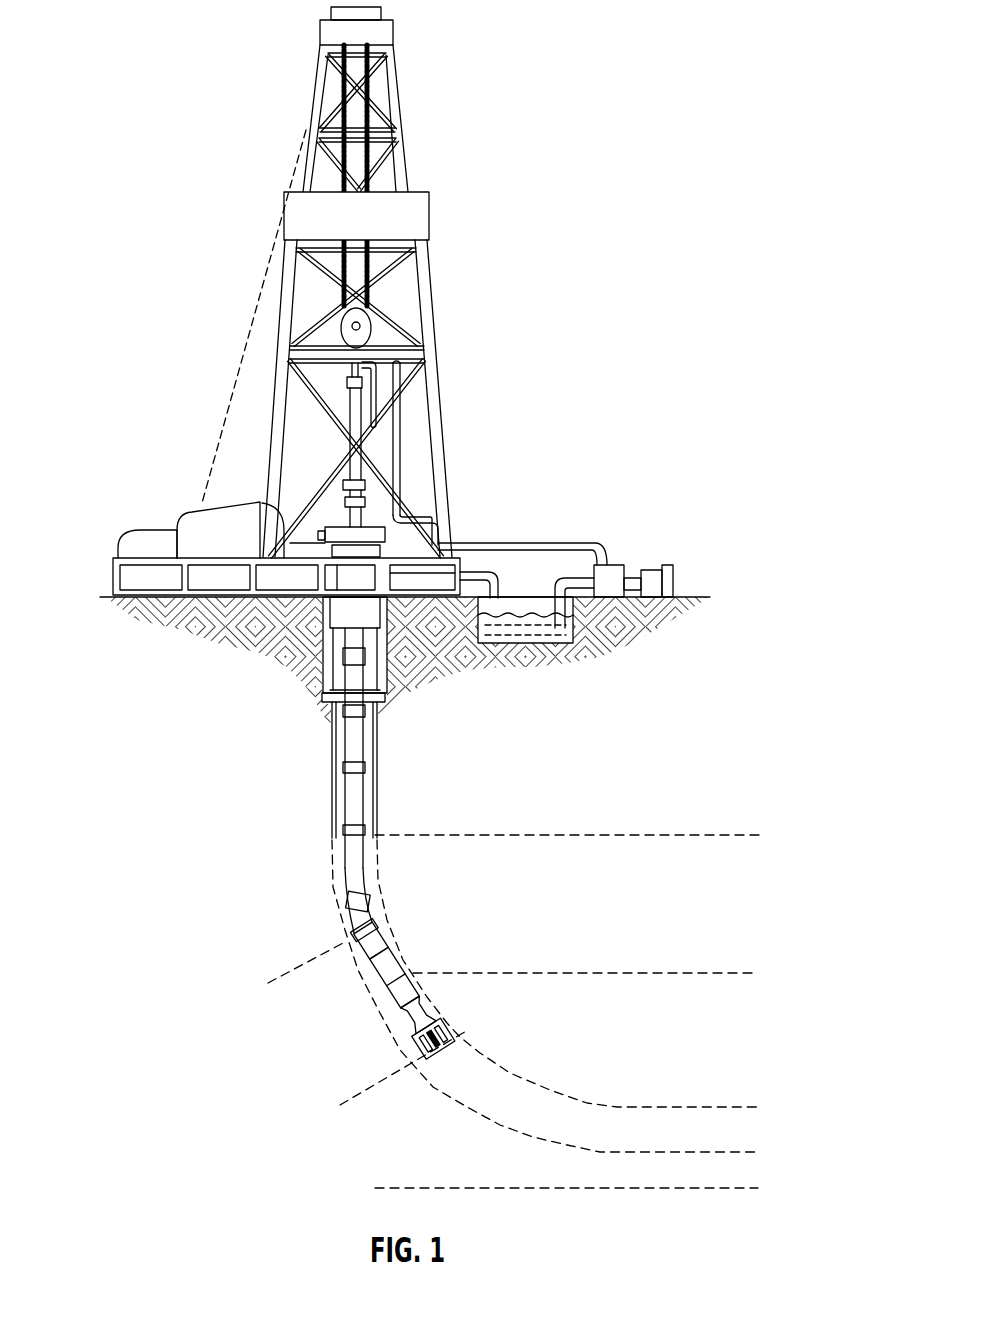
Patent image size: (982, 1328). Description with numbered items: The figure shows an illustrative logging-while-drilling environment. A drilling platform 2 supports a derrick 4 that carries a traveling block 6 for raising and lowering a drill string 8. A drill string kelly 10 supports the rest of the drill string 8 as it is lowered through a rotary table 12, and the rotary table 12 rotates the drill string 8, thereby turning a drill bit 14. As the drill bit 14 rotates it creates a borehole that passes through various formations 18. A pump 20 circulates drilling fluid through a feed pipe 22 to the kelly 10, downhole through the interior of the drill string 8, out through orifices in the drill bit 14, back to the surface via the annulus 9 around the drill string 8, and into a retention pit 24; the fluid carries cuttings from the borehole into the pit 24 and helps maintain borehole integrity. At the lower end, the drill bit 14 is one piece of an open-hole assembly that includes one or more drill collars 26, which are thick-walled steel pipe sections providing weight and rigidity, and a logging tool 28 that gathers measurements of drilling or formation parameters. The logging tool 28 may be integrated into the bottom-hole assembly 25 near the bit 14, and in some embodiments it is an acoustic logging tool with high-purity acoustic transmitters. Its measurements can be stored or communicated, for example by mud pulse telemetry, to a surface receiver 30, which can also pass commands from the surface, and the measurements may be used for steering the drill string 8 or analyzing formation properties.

The drilling platform 2 is at (113, 583).
The derrick 4 is at (410, 128).
The traveling block 6 is at (371, 330).
The drill string 8 is at (365, 745).
The annulus 9 is at (340, 795).
The drill string kelly 10 is at (345, 387).
The rotary table 12 is at (332, 527).
The drill bit 14 is at (446, 1050).
The formations 18 is at (760, 835).
The pump 20 is at (615, 565).
The feed pipe 22 is at (528, 543).
The retention pit 24 is at (506, 628).
The bottom-hole assembly 25 is at (340, 1105).
The drill collars 26 is at (368, 980).
The logging tool 28 is at (348, 939).
The surface receiver 30 is at (365, 484).